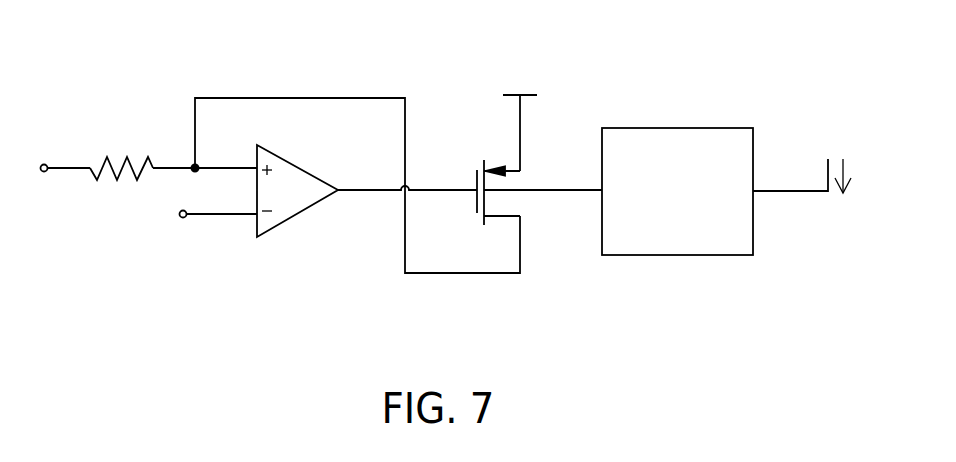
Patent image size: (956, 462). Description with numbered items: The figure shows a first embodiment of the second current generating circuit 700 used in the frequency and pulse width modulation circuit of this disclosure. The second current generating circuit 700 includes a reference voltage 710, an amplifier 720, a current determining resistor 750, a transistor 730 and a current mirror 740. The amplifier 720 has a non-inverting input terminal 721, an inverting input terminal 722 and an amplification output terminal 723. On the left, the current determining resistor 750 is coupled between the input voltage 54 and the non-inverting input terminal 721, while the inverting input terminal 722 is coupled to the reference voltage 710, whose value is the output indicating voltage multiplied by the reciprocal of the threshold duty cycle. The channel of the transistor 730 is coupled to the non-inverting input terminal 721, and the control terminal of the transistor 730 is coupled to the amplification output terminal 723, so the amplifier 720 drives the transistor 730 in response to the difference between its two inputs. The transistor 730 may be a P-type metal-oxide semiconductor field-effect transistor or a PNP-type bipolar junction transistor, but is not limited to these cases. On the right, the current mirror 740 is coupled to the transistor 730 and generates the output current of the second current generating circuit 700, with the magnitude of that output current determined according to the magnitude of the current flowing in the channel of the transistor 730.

The second current generating circuit 700 is at (770, 34).
The input voltage 54 is at (44, 164).
The current determining resistor 750 is at (127, 157).
The reference voltage 710 is at (179, 214).
The amplifier 720 is at (336, 189).
The non-inverting input terminal 721 is at (257, 167).
The inverting input terminal 722 is at (257, 214).
The amplification output terminal 723 is at (339, 193).
The transistor 730 is at (505, 171).
The current mirror 740 is at (657, 223).